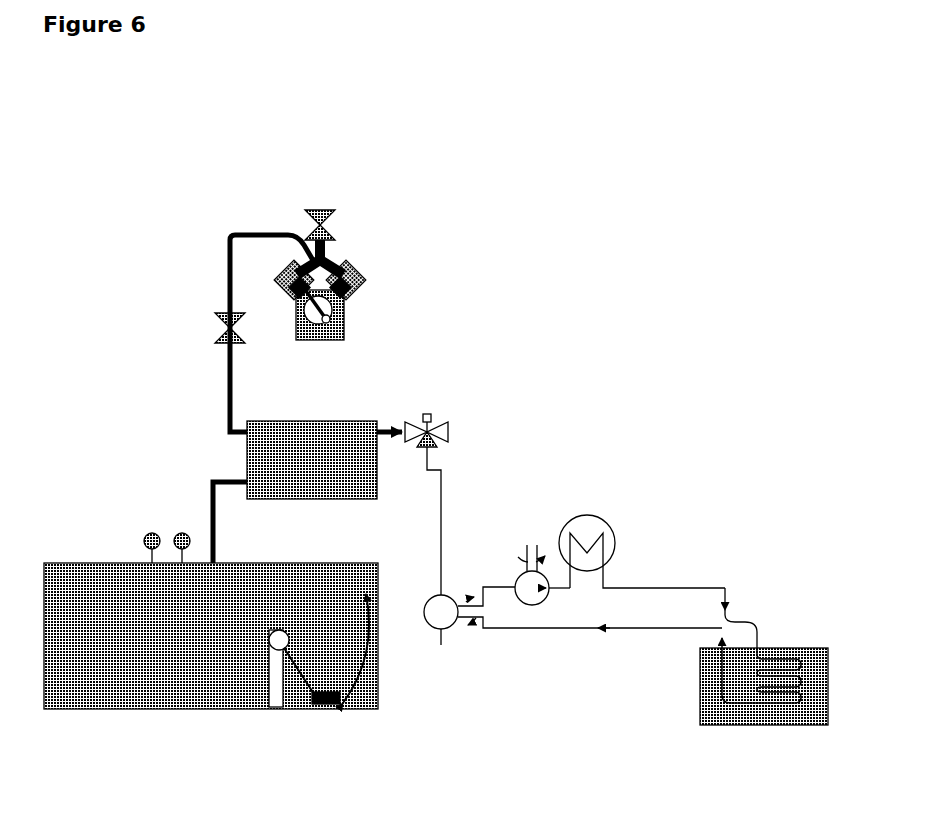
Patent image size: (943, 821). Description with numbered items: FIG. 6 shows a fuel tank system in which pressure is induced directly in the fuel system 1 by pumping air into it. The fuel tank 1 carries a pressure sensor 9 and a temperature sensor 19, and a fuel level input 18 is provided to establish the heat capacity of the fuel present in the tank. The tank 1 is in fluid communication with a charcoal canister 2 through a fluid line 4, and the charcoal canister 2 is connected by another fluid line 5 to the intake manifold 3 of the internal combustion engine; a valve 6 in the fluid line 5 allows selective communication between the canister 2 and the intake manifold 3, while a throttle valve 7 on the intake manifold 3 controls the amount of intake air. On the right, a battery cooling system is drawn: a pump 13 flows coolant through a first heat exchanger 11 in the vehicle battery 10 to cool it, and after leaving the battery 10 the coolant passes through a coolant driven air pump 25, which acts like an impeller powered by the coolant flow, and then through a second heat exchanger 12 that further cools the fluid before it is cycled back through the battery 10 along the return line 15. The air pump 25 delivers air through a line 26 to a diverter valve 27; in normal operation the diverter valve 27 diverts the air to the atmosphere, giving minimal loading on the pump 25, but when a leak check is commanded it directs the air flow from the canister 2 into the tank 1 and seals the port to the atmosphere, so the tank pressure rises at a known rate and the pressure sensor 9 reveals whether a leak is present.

The fuel tank 1 is at (86, 562).
The charcoal canister 2 is at (244, 458).
The intake manifold 3 is at (338, 252).
The fluid line 4 is at (208, 516).
The fluid line 5 is at (228, 268).
The valve 6 is at (213, 332).
The throttle valve 7 is at (302, 223).
The pressure sensor 9 is at (143, 531).
The battery 10 is at (697, 690).
The first heat exchanger 11 is at (765, 708).
The second heat exchanger 12 is at (580, 511).
The pump 13 is at (515, 543).
The cooling circuit pipe 15 is at (729, 591).
The fuel level input 18 is at (298, 677).
The temperature sensor 19 is at (175, 530).
The coolant driven air pump 25 is at (455, 640).
The pipe 26 is at (436, 513).
The diverter valve 27 is at (400, 425).